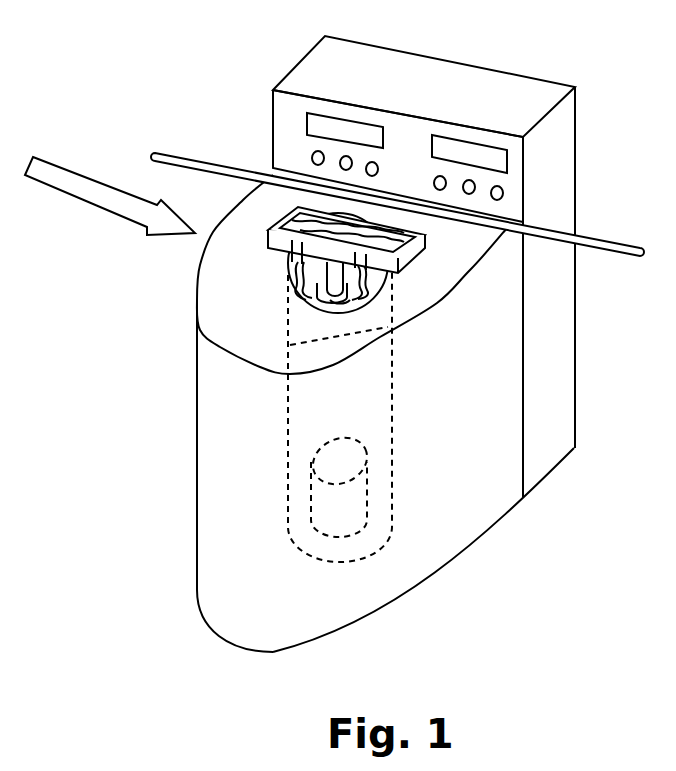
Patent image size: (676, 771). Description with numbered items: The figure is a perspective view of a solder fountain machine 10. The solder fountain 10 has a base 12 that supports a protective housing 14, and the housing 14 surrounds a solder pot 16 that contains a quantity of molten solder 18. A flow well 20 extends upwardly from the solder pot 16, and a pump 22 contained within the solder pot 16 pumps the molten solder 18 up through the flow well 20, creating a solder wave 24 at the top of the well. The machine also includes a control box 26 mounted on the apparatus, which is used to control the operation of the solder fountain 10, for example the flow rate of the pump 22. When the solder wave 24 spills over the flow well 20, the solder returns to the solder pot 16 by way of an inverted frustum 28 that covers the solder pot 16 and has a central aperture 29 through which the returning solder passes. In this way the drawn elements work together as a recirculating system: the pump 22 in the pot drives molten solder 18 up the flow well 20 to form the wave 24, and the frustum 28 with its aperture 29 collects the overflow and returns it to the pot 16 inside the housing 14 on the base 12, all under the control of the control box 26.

The solder fountain machine 10 is at (583, 199).
The base 12 is at (498, 528).
The protective housing 14 is at (190, 511).
The solder pot 16 is at (290, 340).
The molten solder 18 is at (338, 360).
The flow well 20 is at (425, 261).
The pump 22 is at (356, 500).
The solder wave 24 is at (266, 229).
The control box 26 is at (403, 140).
The inverted frustum 28 is at (288, 302).
The central aperture 29 is at (340, 310).